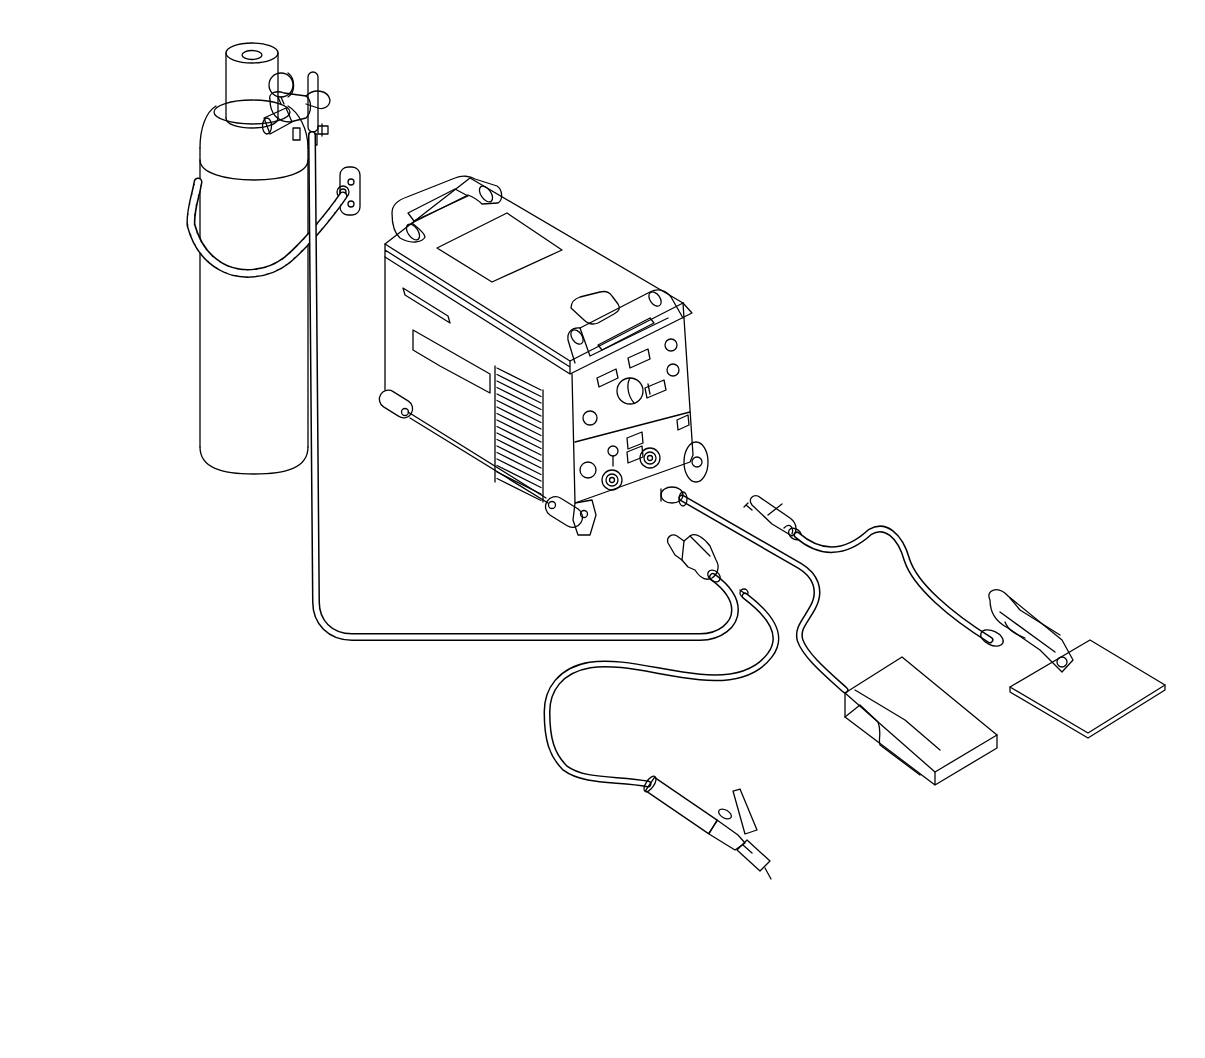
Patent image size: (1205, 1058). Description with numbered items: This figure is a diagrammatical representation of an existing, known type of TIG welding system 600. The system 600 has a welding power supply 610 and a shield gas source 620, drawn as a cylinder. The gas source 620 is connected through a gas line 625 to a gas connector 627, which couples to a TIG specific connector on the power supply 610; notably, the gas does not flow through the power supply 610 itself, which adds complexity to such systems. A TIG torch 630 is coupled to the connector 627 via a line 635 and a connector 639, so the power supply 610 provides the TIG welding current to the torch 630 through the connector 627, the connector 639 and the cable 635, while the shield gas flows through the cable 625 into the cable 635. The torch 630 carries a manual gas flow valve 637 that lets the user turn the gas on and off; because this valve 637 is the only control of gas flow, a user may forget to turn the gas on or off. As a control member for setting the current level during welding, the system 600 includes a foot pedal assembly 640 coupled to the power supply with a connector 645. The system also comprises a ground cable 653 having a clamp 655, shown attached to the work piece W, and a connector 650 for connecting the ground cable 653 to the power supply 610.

The system 600 is at (723, 243).
The welding power supply 610 is at (577, 260).
The shield gas source 620 is at (222, 337).
The gas line 625 is at (319, 550).
The gas connector 627 is at (683, 567).
The TIG torch 630 is at (671, 805).
The line 635 is at (552, 712).
The manual gas flow valve 637 is at (720, 817).
The connector 639 is at (746, 592).
The foot pedal assembly 640 is at (932, 720).
The connector 645 is at (707, 490).
The connector 650 is at (777, 517).
The ground cable 653 is at (888, 523).
The clamp 655 is at (1005, 600).
The workpiece W is at (1103, 695).